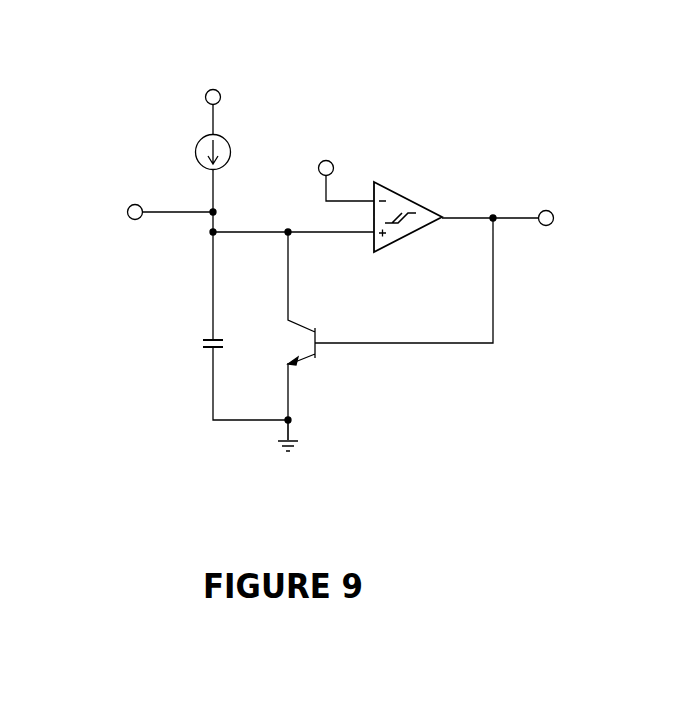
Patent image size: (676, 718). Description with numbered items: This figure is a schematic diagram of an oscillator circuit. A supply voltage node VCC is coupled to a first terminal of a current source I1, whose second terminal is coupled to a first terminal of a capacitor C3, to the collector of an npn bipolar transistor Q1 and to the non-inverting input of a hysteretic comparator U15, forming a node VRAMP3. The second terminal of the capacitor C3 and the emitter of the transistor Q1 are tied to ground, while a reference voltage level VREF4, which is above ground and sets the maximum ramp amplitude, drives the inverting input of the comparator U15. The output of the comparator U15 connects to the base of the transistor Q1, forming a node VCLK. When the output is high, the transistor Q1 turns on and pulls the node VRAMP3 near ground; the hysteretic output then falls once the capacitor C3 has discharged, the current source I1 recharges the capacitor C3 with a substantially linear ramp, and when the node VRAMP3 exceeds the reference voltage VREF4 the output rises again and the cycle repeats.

The supply voltage node VCC is at (213, 74).
The node VRAMP3 is at (82, 212).
The reference voltage level VREF4 is at (325, 152).
The node VCLK is at (579, 220).
The current source I1 is at (195, 152).
The capacitor C3 is at (192, 342).
The npn bipolar transistor Q1 is at (313, 326).
The hysteretic comparator U15 is at (411, 210).